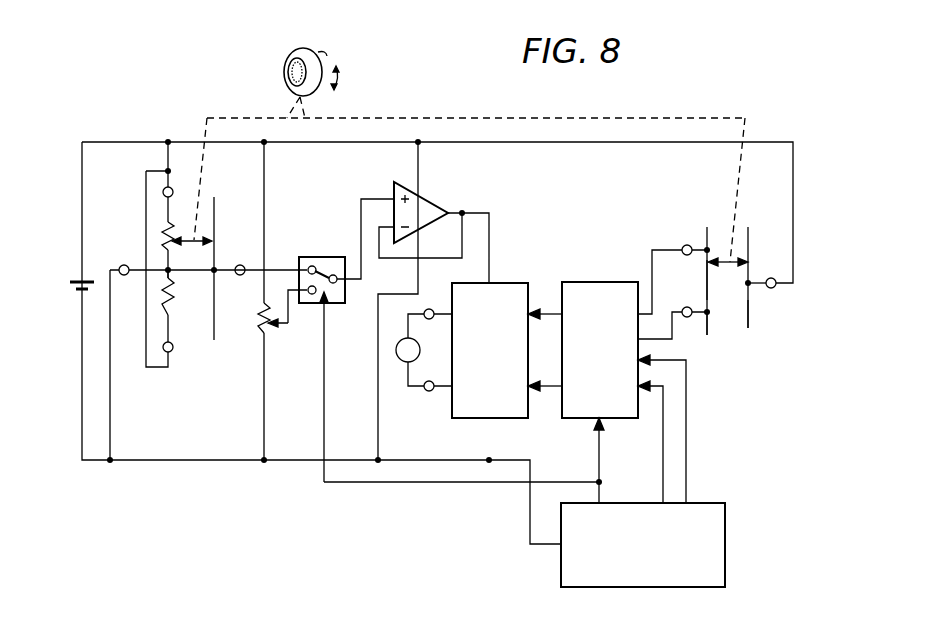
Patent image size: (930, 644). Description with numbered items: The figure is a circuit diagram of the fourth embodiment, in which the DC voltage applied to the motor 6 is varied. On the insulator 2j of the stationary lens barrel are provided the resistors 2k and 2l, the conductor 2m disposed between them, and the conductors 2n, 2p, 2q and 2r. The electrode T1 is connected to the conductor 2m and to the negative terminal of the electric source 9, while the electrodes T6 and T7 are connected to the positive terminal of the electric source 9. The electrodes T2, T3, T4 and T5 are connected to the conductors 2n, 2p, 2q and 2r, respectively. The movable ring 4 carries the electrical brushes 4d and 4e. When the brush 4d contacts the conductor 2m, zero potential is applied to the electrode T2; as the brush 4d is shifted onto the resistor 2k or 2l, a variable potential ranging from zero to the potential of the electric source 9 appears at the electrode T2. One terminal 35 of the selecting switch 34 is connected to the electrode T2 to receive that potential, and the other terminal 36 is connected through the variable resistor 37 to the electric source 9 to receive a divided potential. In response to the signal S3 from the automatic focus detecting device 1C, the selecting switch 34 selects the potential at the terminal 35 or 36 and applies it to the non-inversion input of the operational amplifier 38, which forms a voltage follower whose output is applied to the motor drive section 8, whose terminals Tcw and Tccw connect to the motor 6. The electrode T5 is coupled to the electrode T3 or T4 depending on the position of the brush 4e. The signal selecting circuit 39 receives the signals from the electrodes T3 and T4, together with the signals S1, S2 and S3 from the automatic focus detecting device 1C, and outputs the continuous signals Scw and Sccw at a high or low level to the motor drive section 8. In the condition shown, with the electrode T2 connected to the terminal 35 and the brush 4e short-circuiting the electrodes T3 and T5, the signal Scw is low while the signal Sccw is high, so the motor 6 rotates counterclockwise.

The movable ring 4 is at (286, 66).
The electric source 9 is at (72, 286).
The electrode T1 is at (121, 263).
The electrode T2 is at (240, 264).
The electrode T3 is at (684, 245).
The electrode T4 is at (688, 318).
The electrode T5 is at (771, 278).
The electrode T6 is at (162, 192).
The electrode T7 is at (172, 354).
The resistor 2k is at (162, 234).
The resistor 2l is at (162, 300).
The conductor 2m is at (172, 296).
The conductor 2n is at (216, 218).
The electrical brush 4d is at (196, 248).
The variable resistor 37 is at (258, 318).
The selecting switch 34 is at (330, 257).
The terminal 35 is at (309, 265).
The terminal 36 is at (310, 300).
The operational amplifier 38 is at (426, 204).
The motor drive section 8 is at (508, 282).
The motor 6 is at (400, 341).
The clockwise terminal Tcw is at (428, 306).
The counterclockwise terminal Tccw is at (429, 392).
The signal selecting circuit 39 is at (608, 282).
The output signal Scw is at (550, 308).
The output signal Sccw is at (550, 392).
The conductor 2p is at (708, 226).
The insulator 2j is at (702, 294).
The conductor 2q is at (708, 334).
The conductor 2r is at (750, 328).
The electrical brush 4e is at (740, 258).
The signal S1 is at (688, 428).
The signal S2 is at (662, 452).
The signal S3 is at (596, 466).
The automatic focus detecting device 1C is at (726, 520).